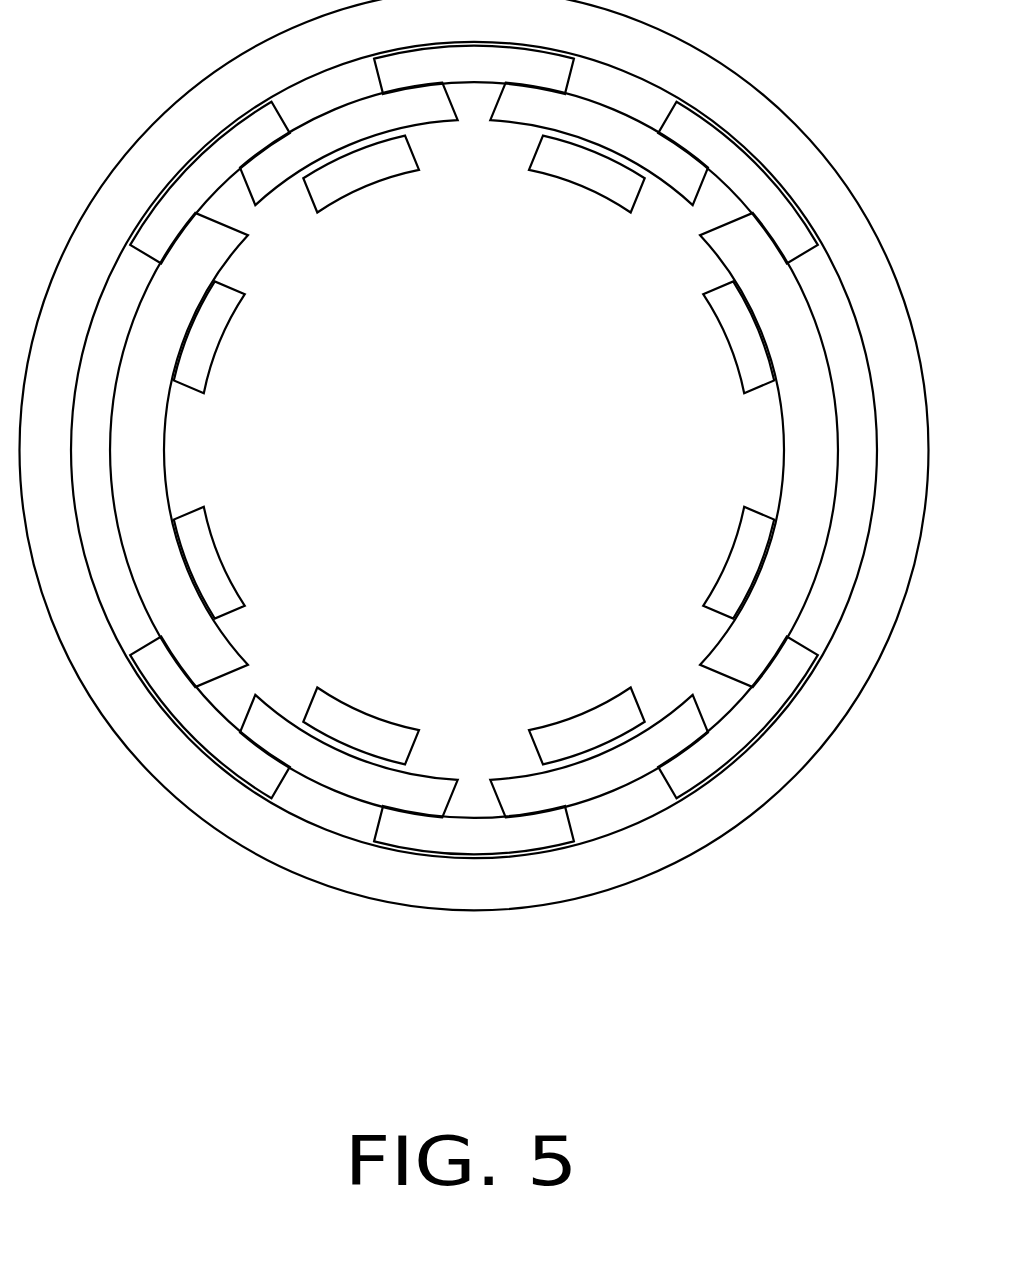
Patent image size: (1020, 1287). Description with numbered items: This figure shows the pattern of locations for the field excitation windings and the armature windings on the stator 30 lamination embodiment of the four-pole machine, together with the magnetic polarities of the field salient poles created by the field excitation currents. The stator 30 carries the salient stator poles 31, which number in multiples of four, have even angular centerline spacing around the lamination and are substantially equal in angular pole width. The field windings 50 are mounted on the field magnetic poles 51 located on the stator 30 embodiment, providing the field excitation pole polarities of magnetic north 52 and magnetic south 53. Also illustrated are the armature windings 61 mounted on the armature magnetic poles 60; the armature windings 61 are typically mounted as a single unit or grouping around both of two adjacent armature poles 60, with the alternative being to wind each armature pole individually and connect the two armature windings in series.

The stator 30 is at (807, 137).
The salient stator poles 31 is at (472, 450).
The field windings 50 is at (474, 450).
The field magnetic poles 51 is at (473, 450).
The magnetic north 52 is at (479, 457).
The magnetic south 53 is at (474, 451).
The armature magnetic poles 60 is at (474, 449).
The armature windings 61 is at (474, 450).